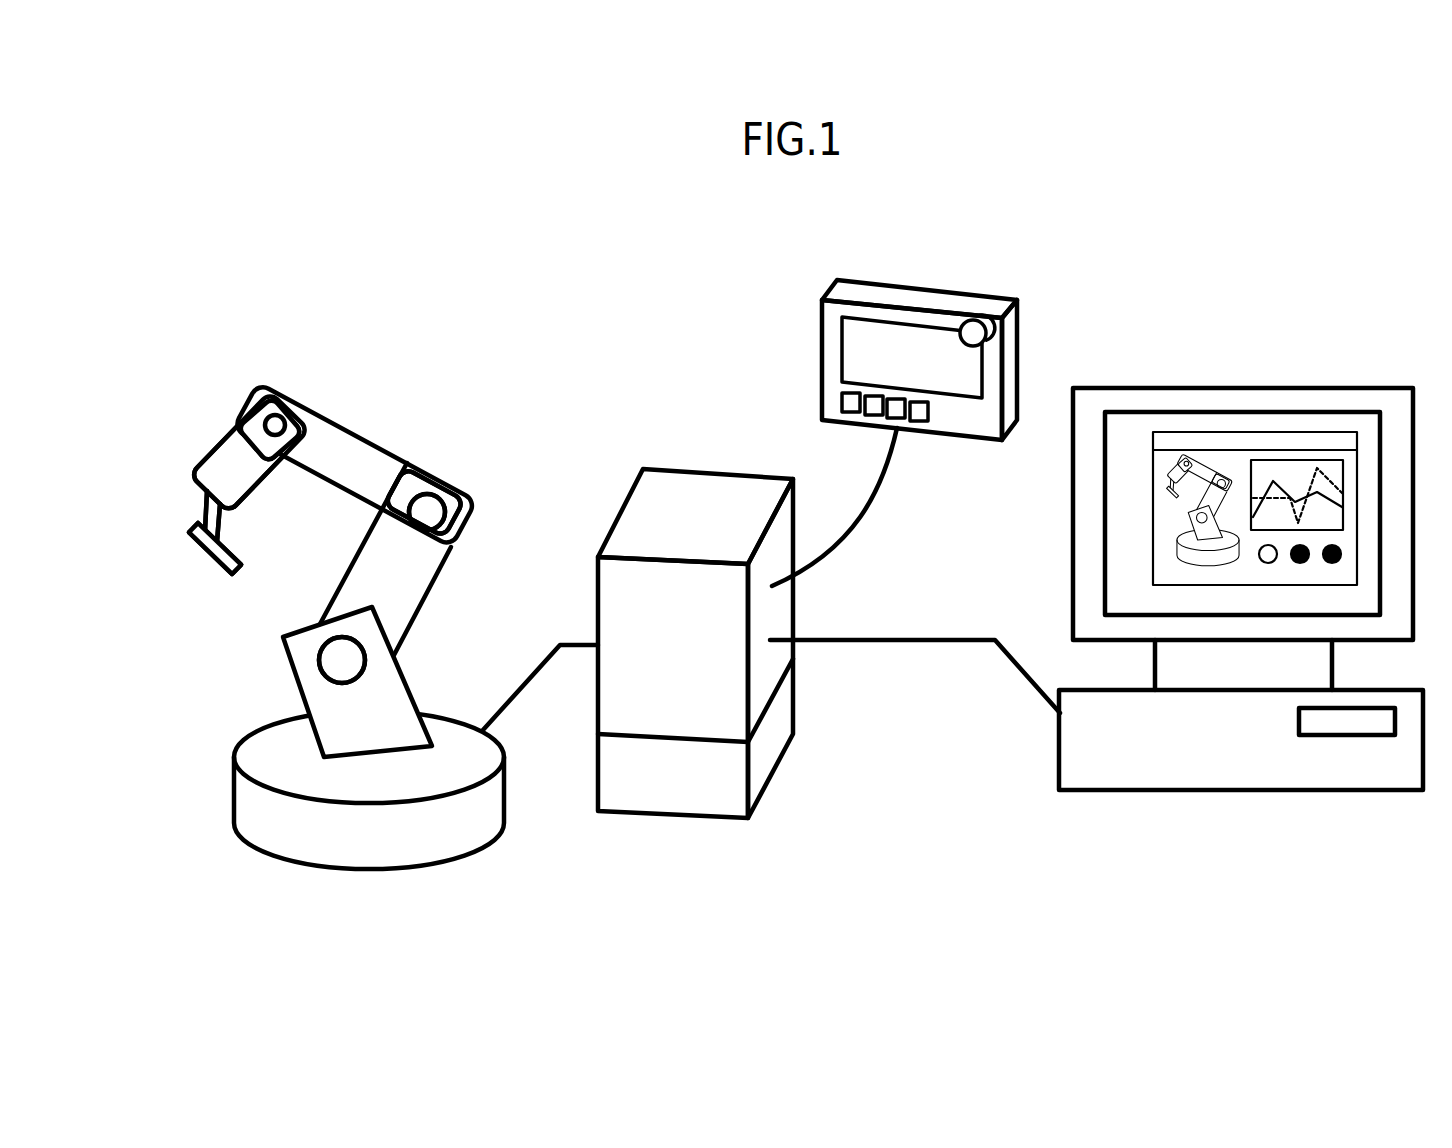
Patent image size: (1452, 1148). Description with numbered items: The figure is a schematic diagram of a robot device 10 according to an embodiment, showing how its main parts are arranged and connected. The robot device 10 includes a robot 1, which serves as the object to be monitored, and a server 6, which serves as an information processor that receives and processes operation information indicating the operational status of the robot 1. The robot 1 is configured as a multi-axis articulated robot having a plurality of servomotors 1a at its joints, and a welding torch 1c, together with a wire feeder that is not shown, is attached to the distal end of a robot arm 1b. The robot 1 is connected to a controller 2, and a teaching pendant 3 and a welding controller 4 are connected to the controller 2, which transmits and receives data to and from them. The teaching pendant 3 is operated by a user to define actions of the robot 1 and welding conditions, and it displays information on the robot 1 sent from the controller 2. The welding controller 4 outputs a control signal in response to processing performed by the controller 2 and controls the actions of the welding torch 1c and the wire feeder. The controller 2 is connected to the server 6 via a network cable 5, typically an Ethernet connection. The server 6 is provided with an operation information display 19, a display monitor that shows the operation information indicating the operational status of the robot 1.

The robot device 10 is at (705, 275).
The robot 1 is at (374, 405).
The servomotor 1a is at (280, 413).
The robot arm 1b is at (218, 448).
The welding torch 1c is at (207, 556).
The controller 2 is at (711, 479).
The teaching pendant 3 is at (917, 300).
The welding controller 4 is at (677, 807).
The network cable 5 is at (881, 643).
The server 6 is at (1253, 787).
The operation information display 19 is at (1243, 397).